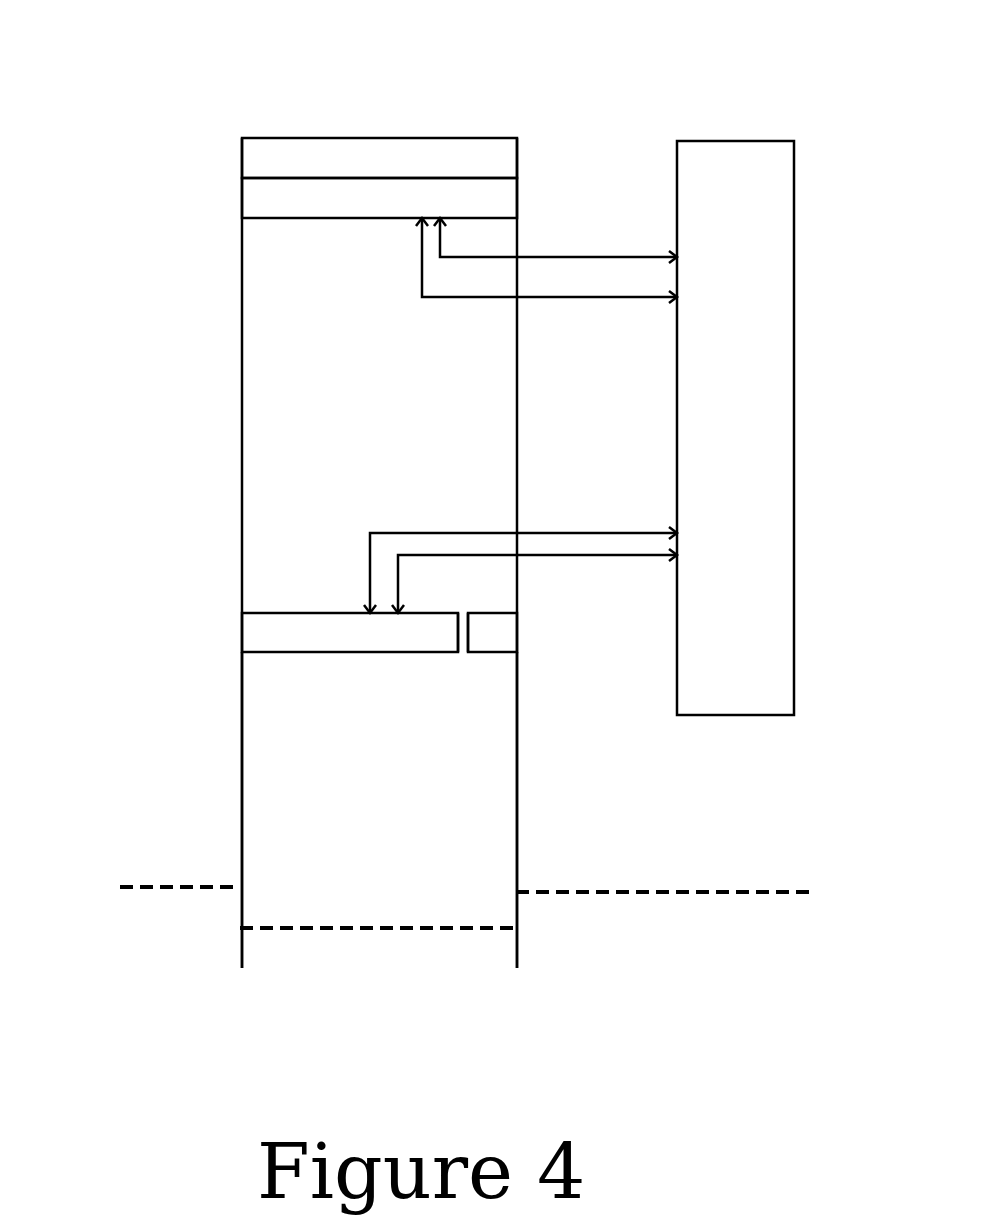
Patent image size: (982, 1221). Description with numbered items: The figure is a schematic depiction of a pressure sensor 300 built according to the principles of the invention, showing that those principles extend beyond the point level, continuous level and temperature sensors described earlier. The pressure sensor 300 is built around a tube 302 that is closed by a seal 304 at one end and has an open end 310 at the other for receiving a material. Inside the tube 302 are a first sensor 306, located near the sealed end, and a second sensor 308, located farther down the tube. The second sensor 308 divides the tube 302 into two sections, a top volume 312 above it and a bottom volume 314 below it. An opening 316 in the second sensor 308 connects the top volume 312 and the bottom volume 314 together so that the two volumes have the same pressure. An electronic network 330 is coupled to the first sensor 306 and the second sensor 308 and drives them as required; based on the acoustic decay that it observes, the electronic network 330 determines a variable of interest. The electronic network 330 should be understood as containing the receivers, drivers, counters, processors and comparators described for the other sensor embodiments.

The pressure sensor 300 is at (562, 24).
The tube 302 is at (242, 354).
The seal 304 is at (300, 136).
The first sensor 306 is at (513, 197).
The second sensor 308 is at (262, 633).
The open end 310 is at (346, 975).
The top volume 312 is at (420, 365).
The bottom volume 314 is at (318, 838).
The opening 316 is at (462, 657).
The electronic network 330 is at (713, 715).